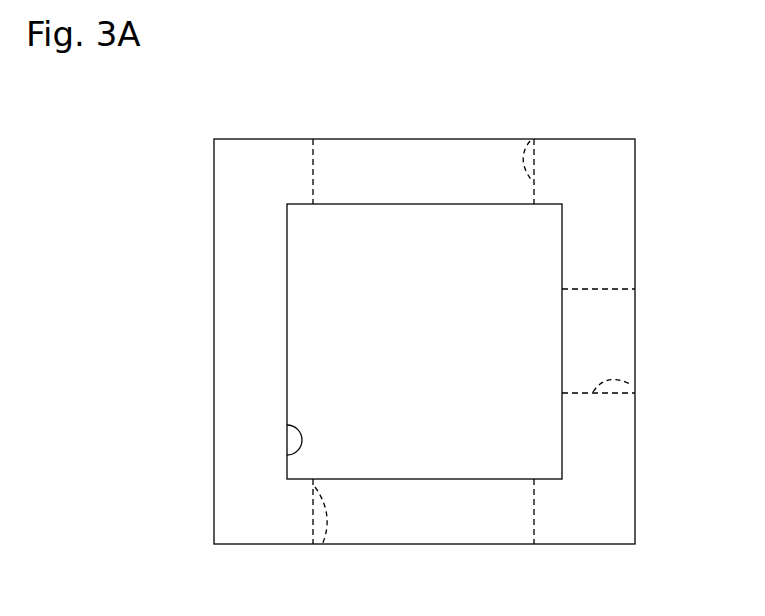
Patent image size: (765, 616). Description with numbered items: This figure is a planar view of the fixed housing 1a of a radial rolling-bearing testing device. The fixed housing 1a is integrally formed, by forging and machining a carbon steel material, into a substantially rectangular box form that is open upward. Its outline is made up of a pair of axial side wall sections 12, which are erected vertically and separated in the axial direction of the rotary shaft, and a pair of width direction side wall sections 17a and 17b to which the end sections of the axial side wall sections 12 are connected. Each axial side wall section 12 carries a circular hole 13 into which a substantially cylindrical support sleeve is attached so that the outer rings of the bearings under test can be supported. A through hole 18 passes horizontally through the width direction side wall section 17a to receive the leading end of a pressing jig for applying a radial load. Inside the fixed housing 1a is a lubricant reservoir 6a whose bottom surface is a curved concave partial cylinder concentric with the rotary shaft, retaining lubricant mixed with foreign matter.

The fixed housing 1a is at (210, 199).
The lubricant reservoir 6a is at (287, 455).
The axial side wall section 12 is at (337, 155).
The circular hole 13 is at (533, 139).
The width direction side wall section 17a is at (614, 239).
The width direction side wall section 17b is at (235, 371).
The through hole 18 is at (637, 386).